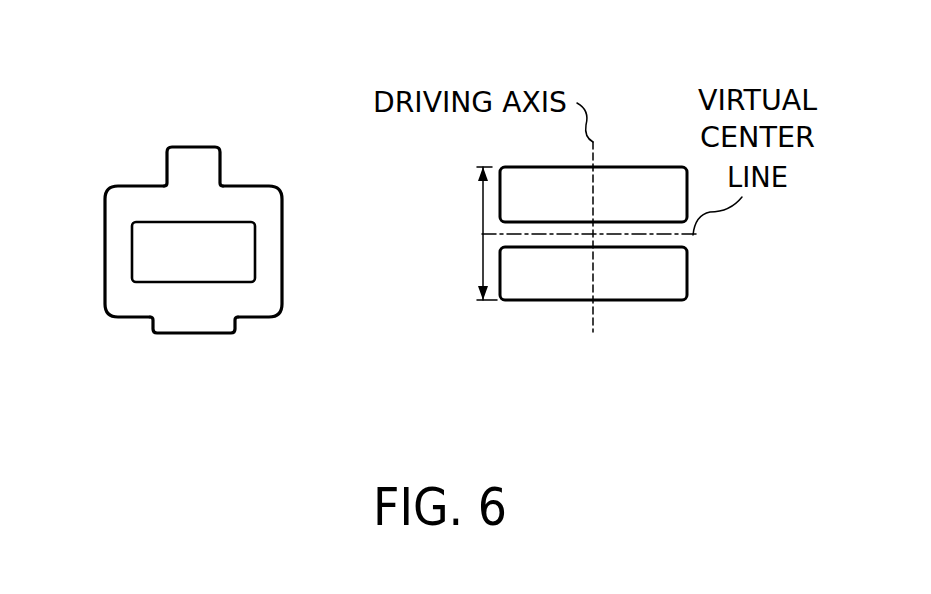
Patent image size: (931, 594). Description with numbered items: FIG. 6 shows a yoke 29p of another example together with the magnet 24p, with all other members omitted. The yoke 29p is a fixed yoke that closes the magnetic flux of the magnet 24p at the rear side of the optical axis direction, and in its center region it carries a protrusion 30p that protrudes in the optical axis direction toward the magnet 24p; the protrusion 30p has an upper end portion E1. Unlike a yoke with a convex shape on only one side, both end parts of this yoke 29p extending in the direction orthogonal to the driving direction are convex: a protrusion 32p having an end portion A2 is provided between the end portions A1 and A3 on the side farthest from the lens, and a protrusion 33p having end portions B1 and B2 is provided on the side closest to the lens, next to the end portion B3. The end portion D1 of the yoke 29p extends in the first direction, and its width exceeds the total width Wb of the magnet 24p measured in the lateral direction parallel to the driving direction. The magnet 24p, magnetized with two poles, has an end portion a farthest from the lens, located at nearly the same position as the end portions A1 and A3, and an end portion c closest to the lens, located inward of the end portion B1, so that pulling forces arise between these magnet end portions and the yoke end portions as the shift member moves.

The yoke 29p is at (265, 293).
The protrusion 30p is at (153, 263).
The protrusion 32p is at (197, 173).
The protrusion 33p is at (213, 315).
The magnet 24p is at (593, 236).
The end portion of the magnet a is at (633, 167).
The end portion of the magnet c is at (658, 302).
The total width of the magnet Wb is at (464, 233).
The end portion of the yoke A1 is at (130, 185).
The end portion of the protrusion A2 is at (167, 150).
The end portion of the yoke A3 is at (247, 183).
The end portion of the yoke B1 is at (127, 318).
The end portion of the protrusion B2 is at (180, 333).
The end portion of the yoke B3 is at (257, 320).
The end portion of the yoke D1 is at (282, 246).
The end portion of the protrusion E1 is at (233, 222).